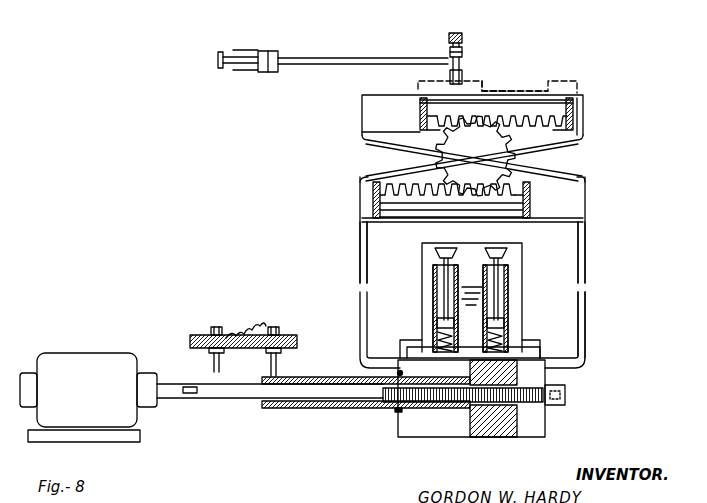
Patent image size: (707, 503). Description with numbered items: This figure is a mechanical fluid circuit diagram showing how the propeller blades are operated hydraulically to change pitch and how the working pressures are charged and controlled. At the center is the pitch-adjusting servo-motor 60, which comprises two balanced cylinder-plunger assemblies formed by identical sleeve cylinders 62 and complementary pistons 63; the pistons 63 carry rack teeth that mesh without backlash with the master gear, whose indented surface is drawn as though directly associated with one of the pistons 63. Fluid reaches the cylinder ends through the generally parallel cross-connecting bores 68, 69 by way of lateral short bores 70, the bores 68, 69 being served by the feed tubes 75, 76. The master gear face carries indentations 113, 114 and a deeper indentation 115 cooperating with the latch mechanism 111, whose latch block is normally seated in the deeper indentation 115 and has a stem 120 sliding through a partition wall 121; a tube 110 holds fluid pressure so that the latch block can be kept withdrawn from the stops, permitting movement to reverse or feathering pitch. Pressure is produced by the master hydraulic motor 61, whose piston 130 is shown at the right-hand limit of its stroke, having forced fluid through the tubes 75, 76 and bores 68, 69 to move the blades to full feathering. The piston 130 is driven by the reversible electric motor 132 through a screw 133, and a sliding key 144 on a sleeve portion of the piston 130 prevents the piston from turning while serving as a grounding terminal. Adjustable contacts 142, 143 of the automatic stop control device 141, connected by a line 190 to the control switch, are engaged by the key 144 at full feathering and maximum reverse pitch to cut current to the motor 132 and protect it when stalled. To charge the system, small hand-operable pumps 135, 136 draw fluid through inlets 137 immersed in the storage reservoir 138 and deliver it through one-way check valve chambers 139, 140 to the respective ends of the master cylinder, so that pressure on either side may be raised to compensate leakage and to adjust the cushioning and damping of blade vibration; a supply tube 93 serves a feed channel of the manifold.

The pitch-adjusting servo-motor 60 is at (492, 145).
The master hydraulic motor 61 is at (471, 421).
The cylinders 62 is at (565, 215).
The pistons 63 is at (586, 102).
The bore 68 is at (575, 152).
The bore 69 is at (392, 155).
The lateral short bores 70 is at (362, 143).
The feed tube 75 is at (360, 255).
The feed tube 76 is at (585, 255).
The supply tube 93 is at (585, 329).
The tube 110 is at (400, 58).
The latch mechanism 111 is at (470, 48).
The indentation 113 is at (478, 83).
The indentation 114 is at (545, 82).
The deeper indentation 115 is at (500, 91).
The stem 120 is at (253, 72).
The partition wall 121 is at (263, 51).
The piston 130 is at (497, 413).
The reversible electric motor 132 is at (103, 396).
The screw 133 is at (546, 395).
The hand-operable pump 135 is at (434, 290).
The hand-operable pump 136 is at (509, 285).
The inlets 137 is at (430, 305).
The storage reservoir 138 is at (520, 333).
The check valve chamber 139 is at (440, 345).
The check valve chamber 140 is at (487, 345).
The automatic stop control device 141 is at (197, 320).
The adjustable contact 142 is at (211, 364).
The adjustable contact 143 is at (280, 366).
The sliding key 144 is at (262, 380).
The line 190 is at (245, 318).